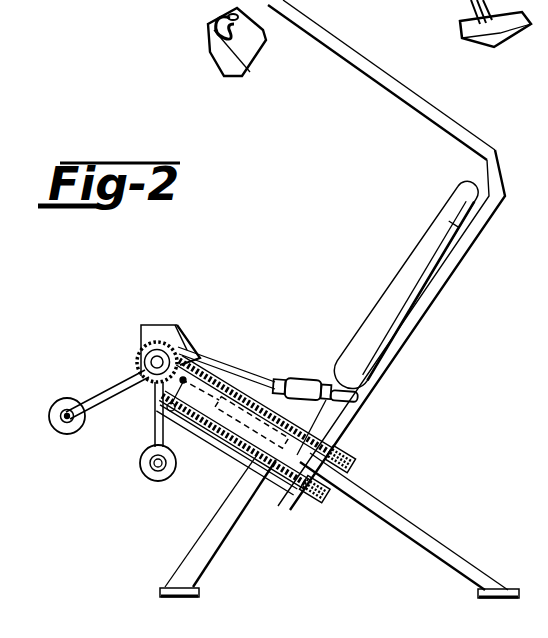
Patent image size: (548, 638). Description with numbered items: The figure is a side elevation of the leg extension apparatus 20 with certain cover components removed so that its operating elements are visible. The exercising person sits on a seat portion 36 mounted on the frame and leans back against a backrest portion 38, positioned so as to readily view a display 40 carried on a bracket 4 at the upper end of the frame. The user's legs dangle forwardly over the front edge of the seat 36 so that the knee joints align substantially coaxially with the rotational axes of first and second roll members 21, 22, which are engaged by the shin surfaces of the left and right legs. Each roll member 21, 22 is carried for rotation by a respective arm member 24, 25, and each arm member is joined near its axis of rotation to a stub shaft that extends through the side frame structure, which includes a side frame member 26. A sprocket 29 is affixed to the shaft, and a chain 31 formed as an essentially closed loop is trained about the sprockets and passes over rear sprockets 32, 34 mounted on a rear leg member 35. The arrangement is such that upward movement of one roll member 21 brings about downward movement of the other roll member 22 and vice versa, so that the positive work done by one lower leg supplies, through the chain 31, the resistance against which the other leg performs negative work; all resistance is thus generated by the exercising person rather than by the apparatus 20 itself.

The handle bracket 4 is at (278, 70).
The display 40 is at (254, 78).
The leg extension apparatus 20 is at (300, 236).
The backrest portion 38 is at (412, 258).
The sprocket 29 is at (186, 346).
The side frame member 26 is at (210, 372).
The seat portion 36 is at (270, 374).
The arm member 24 is at (112, 392).
The first roll member 21 is at (62, 420).
The arm member 25 is at (157, 430).
The second roll member 22 is at (168, 476).
The rear sprocket 32 is at (373, 450).
The chain 31 is at (309, 473).
The rear sprocket 34 is at (322, 492).
The rear leg member 35 is at (457, 535).